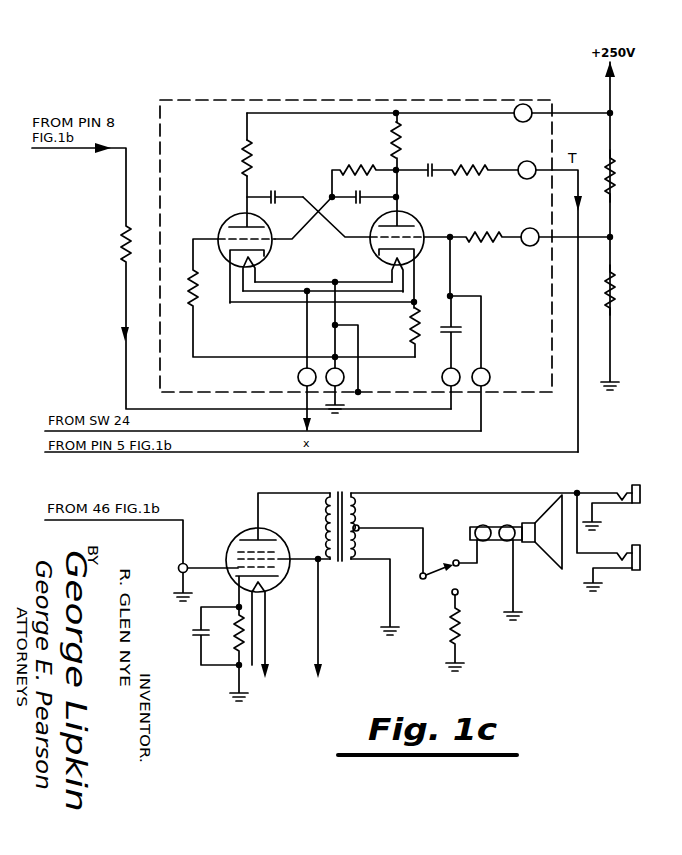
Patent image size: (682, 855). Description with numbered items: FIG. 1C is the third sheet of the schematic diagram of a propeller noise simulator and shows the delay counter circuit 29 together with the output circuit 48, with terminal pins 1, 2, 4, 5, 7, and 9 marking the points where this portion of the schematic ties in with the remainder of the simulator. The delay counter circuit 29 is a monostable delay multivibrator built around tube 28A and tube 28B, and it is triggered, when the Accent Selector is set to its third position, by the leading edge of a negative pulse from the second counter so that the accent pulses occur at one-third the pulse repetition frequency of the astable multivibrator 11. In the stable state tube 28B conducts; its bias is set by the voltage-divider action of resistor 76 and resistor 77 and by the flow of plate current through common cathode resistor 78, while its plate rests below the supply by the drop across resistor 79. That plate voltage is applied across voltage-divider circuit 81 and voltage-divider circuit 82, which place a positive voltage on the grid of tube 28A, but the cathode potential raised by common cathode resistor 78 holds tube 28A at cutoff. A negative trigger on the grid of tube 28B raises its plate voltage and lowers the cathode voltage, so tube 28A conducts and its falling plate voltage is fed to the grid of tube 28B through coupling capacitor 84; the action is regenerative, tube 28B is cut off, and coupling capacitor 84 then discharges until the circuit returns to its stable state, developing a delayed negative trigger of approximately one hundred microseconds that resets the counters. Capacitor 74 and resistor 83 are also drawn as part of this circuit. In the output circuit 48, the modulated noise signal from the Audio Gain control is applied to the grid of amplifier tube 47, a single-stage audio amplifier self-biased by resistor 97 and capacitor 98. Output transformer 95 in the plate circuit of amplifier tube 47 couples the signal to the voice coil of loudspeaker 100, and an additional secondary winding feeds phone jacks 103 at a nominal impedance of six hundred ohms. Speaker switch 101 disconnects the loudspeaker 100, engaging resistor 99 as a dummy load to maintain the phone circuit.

The delay counter circuit 29 is at (222, 105).
The tube 28A is at (231, 221).
The tube 28B is at (412, 221).
The resistor 79 is at (391, 139).
The voltage-divider circuit 81 is at (359, 166).
The coupling capacitor 84 is at (276, 191).
The voltage-divider circuit 82 is at (196, 303).
The common cathode resistor 78 is at (411, 320).
The capacitor 74 is at (457, 333).
The resistor 83 is at (488, 243).
The resistor 76 is at (614, 168).
The resistor 77 is at (616, 283).
The terminal pin 7 is at (523, 113).
The terminal pin 9 is at (527, 170).
The terminal pin 5 is at (530, 237).
The terminal pin 1 is at (307, 377).
The astable multivibrator 11 is at (335, 377).
The terminal pin 4 is at (451, 377).
The terminal pin 2 is at (481, 377).
The amplifier tube 47 is at (278, 533).
The output circuit 48 is at (207, 660).
The resistor 97 is at (236, 640).
The capacitor 98 is at (196, 632).
The output transformer 95 is at (348, 492).
The Speaker switch 101 is at (440, 584).
The resistor 99 is at (466, 622).
The loudspeaker 100 is at (550, 557).
The phone jacks 103 is at (645, 508).